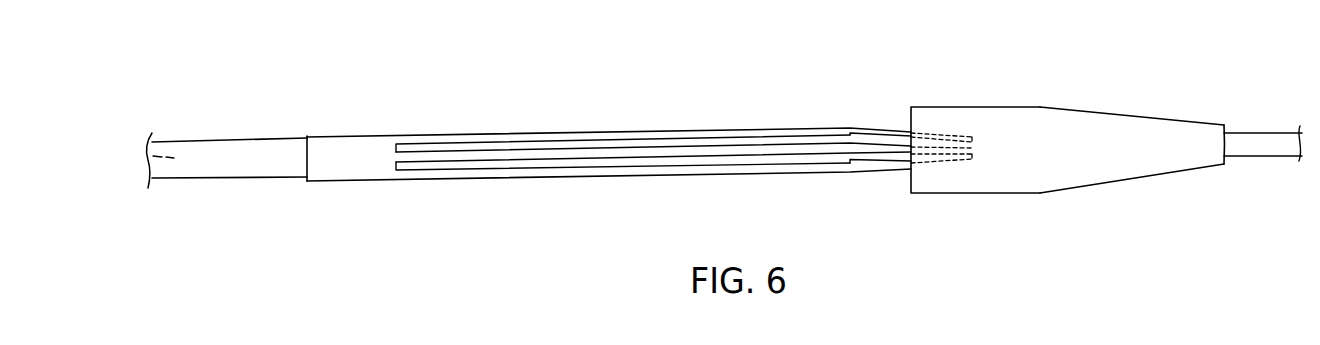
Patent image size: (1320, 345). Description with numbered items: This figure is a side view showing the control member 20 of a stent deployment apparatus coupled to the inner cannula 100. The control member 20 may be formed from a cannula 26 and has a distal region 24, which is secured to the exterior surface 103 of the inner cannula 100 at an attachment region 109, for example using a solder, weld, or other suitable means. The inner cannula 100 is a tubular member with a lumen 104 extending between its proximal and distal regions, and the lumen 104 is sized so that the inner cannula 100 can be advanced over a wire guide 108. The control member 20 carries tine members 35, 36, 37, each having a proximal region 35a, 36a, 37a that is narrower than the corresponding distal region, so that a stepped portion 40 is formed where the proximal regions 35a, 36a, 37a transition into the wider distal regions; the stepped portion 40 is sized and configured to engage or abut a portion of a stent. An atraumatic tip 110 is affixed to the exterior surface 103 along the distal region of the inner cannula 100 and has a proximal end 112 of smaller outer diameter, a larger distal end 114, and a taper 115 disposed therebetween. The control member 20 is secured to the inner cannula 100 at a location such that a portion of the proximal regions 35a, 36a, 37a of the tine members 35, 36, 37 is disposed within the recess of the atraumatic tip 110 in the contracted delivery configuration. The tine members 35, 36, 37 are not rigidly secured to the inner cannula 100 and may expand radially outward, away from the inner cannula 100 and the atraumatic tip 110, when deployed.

The control member 20 is at (609, 143).
The distal region 24 is at (609, 151).
The cannula 26 is at (342, 168).
The tine member 35 is at (618, 138).
The tine member 36 is at (673, 153).
The tine member 37 is at (638, 170).
The proximal region 35a is at (943, 133).
The proximal region 36a is at (975, 148).
The proximal region 37a is at (943, 165).
The stepped portion 40 is at (855, 132).
The inner cannula 100 is at (215, 159).
The exterior surface 103 is at (245, 180).
The lumen 104 is at (146, 157).
The wire guide 108 is at (1260, 148).
The attachment region 109 is at (302, 137).
The atraumatic tip 110 is at (1068, 146).
The proximal end 112 is at (1222, 123).
The distal end 114 is at (913, 107).
The taper 115 is at (1137, 178).